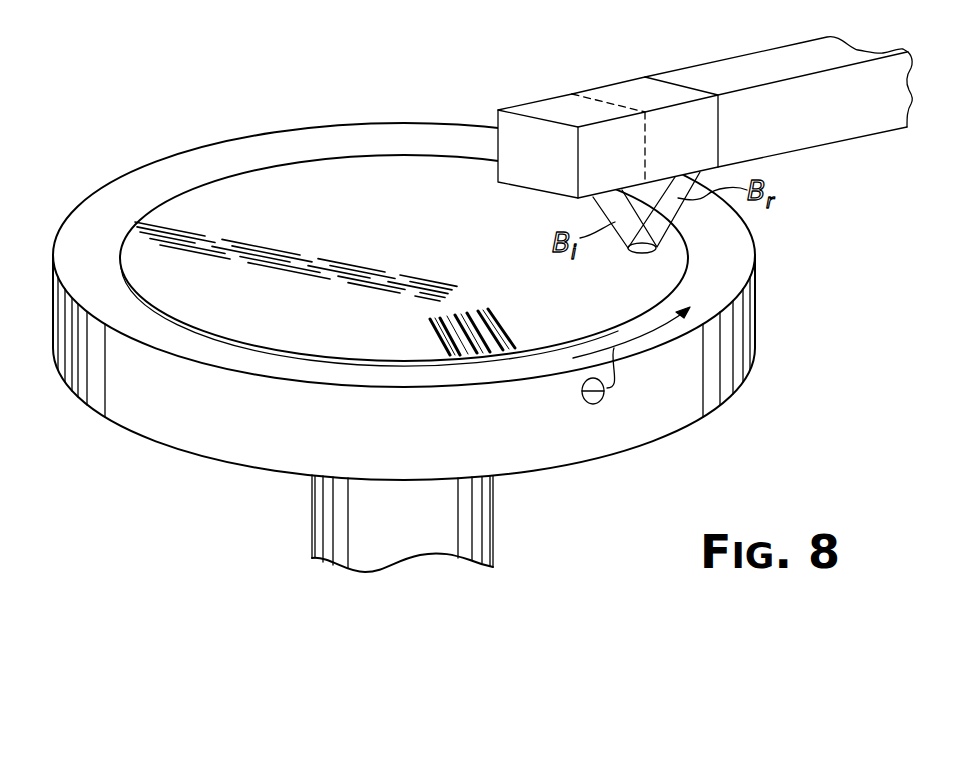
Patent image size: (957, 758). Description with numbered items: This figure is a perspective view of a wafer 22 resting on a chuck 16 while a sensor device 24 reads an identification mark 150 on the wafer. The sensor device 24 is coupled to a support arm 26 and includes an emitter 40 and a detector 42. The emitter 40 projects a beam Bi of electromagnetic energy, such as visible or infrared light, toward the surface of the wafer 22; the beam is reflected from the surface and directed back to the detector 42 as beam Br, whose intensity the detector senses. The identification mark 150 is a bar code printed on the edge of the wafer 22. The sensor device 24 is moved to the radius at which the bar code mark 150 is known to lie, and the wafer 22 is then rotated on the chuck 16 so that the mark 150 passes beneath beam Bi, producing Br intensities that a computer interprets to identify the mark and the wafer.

The chuck 16 is at (152, 407).
The wafer 22 is at (185, 210).
The sensor device 24 is at (705, 100).
The support arm 26 is at (775, 58).
The emitter 40 is at (543, 110).
The detector 42 is at (578, 73).
The identification mark 150 is at (415, 342).